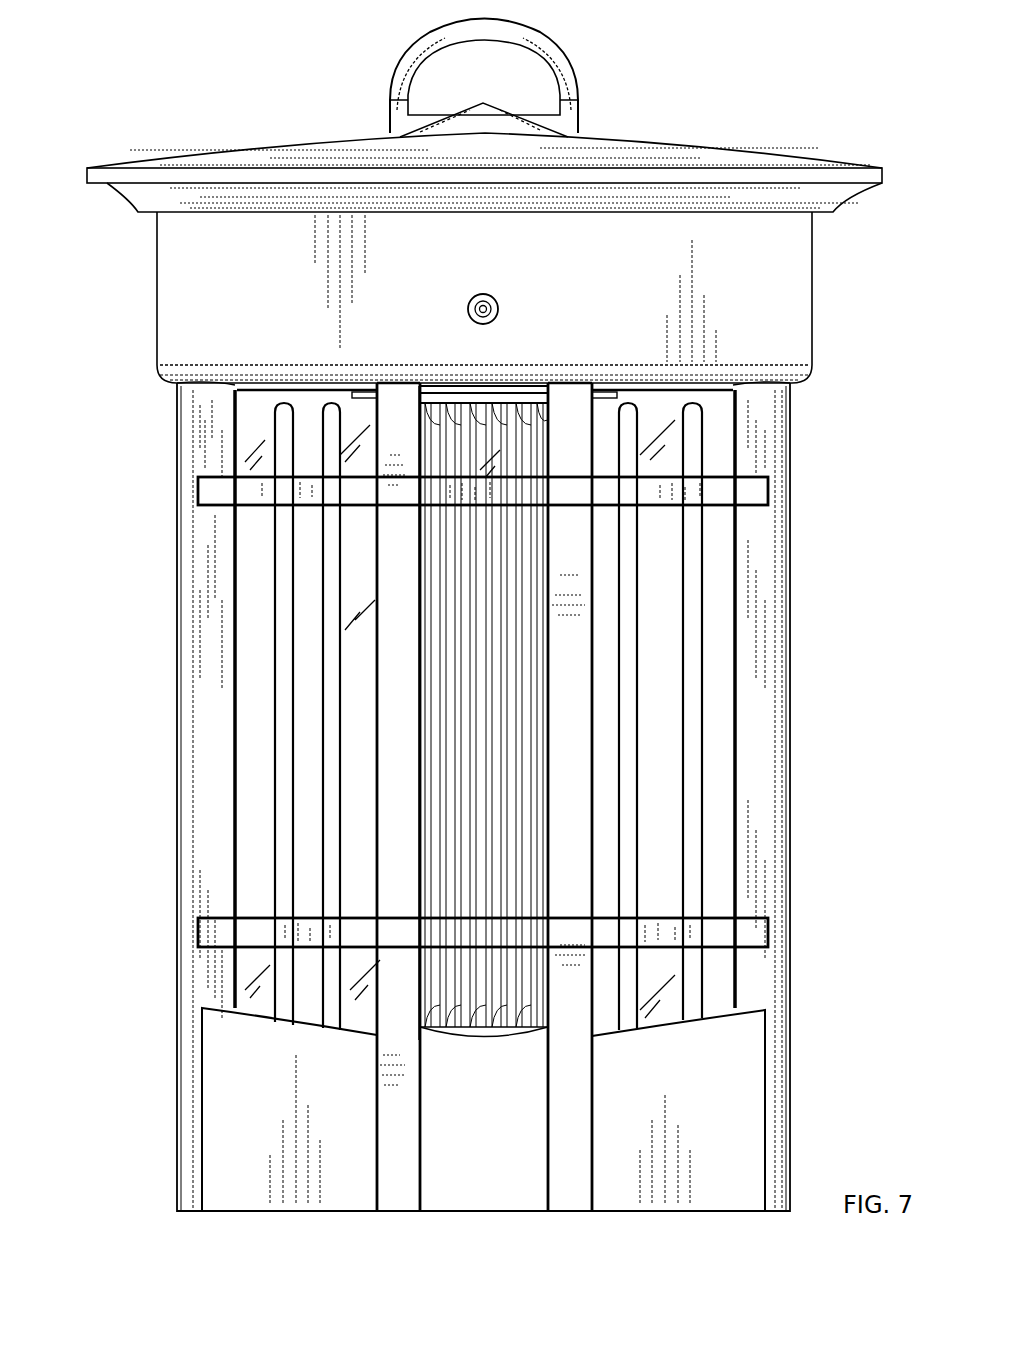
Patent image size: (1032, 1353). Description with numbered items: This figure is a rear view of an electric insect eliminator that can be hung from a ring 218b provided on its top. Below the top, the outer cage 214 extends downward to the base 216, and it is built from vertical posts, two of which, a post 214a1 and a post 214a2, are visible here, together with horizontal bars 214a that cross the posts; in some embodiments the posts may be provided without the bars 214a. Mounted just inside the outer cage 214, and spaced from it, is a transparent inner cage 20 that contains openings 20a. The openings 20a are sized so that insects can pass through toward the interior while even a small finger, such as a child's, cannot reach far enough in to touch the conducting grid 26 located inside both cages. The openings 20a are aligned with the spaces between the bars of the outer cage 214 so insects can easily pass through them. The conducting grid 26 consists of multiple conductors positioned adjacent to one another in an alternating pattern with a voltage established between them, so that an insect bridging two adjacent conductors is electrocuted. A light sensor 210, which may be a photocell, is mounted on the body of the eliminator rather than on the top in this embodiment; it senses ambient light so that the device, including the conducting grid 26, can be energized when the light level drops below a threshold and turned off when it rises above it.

The ring 218b is at (410, 55).
The light sensor 210 is at (497, 312).
The conducting grid 26 is at (460, 580).
The transparent inner cage 20 is at (262, 600).
The openings 20a is at (285, 682).
The outer cage 214 is at (772, 555).
The bars 214a is at (685, 913).
The post 214a1 is at (215, 890).
The post 214a2 is at (757, 860).
The base 216 is at (305, 1120).